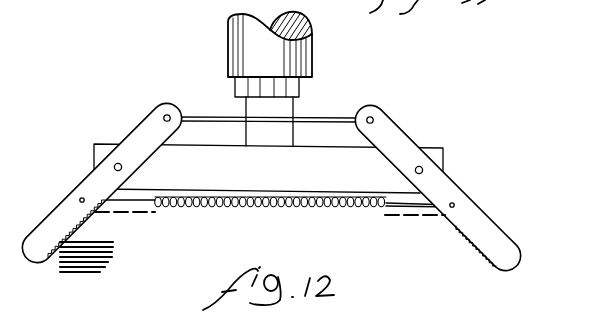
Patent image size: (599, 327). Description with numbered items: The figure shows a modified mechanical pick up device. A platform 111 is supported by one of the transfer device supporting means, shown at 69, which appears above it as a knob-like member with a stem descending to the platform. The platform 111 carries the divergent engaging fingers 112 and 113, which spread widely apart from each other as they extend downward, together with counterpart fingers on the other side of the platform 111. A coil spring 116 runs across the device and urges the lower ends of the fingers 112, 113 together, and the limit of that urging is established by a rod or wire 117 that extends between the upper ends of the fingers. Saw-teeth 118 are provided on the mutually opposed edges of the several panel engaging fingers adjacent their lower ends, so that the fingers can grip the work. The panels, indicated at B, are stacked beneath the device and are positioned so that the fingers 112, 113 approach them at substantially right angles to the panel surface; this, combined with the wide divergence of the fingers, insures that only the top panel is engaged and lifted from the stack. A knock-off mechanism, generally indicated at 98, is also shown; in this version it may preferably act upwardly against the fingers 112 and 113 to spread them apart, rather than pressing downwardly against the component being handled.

The transfer device supporting means 69 is at (253, 52).
The platform 111 is at (437, 152).
The rod or wire 117 is at (330, 116).
The coil spring 116 is at (395, 210).
The engaging finger 113 is at (97, 188).
The engaging finger 112 is at (487, 235).
The saw-teeth 118 is at (465, 237).
The knock-off mechanism 98 is at (430, 222).
The panels B is at (100, 240).